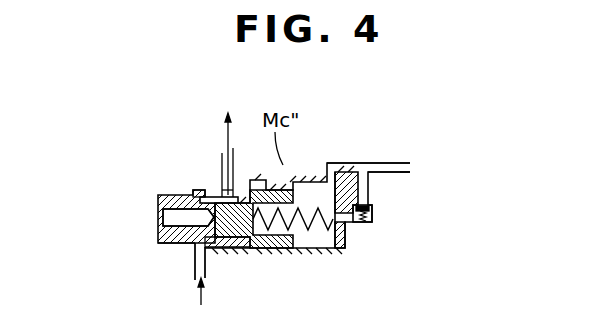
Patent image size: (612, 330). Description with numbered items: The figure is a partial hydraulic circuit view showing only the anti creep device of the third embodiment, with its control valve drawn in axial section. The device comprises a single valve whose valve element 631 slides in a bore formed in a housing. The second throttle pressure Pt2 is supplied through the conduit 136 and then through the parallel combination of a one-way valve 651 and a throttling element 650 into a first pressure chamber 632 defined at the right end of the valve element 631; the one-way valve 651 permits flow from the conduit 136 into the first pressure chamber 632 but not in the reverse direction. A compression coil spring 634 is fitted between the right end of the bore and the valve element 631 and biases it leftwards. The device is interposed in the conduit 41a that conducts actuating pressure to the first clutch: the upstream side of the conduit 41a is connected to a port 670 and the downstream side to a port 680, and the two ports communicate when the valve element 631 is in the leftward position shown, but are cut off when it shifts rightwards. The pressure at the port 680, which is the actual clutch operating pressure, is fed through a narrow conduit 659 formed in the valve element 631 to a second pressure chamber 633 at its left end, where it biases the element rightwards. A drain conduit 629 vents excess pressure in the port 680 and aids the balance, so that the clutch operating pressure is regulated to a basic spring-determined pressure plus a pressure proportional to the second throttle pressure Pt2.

The drain conduit 629 is at (255, 250).
The first pressure chamber 632 is at (320, 240).
The compression coil spring 634 is at (337, 226).
The throttling element 650 is at (349, 162).
The conduit 136 is at (392, 161).
The one-way valve 651 is at (373, 208).
The conduit 41a is at (222, 160).
The port 680 is at (222, 190).
The narrow conduit 659 is at (196, 198).
The second pressure chamber 633 is at (160, 214).
The valve element 631 is at (178, 246).
The port 670 is at (205, 250).
The second throttle pressure Pt2 is at (405, 172).